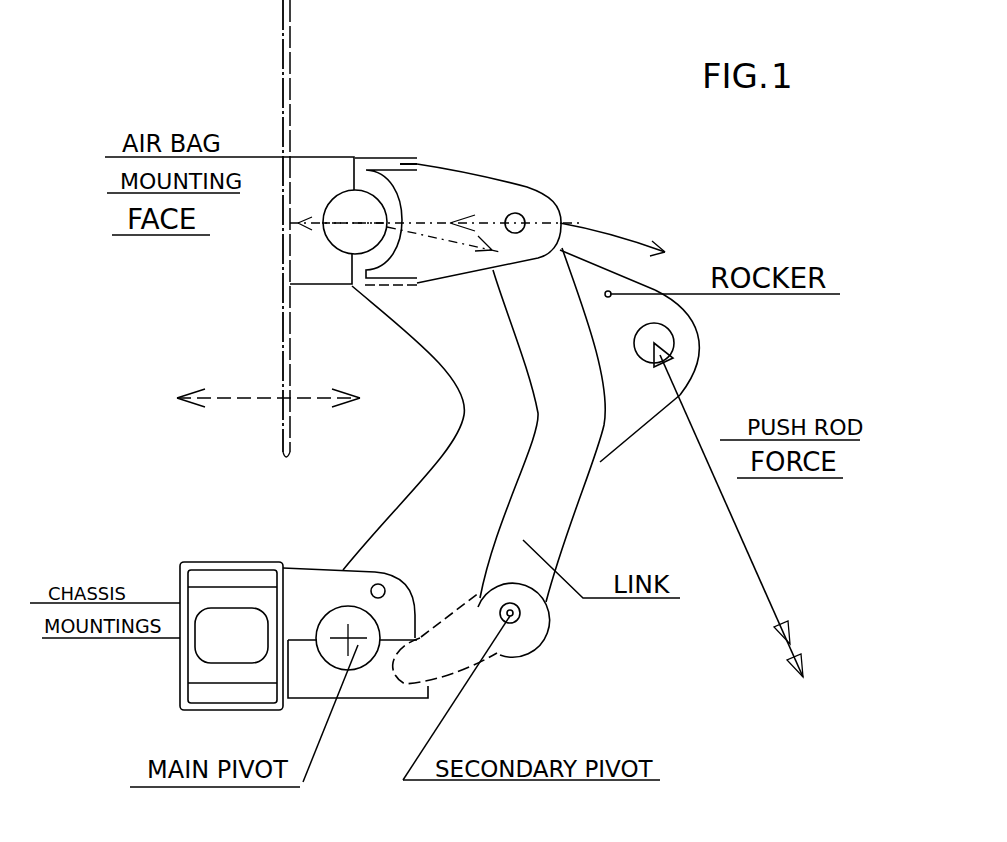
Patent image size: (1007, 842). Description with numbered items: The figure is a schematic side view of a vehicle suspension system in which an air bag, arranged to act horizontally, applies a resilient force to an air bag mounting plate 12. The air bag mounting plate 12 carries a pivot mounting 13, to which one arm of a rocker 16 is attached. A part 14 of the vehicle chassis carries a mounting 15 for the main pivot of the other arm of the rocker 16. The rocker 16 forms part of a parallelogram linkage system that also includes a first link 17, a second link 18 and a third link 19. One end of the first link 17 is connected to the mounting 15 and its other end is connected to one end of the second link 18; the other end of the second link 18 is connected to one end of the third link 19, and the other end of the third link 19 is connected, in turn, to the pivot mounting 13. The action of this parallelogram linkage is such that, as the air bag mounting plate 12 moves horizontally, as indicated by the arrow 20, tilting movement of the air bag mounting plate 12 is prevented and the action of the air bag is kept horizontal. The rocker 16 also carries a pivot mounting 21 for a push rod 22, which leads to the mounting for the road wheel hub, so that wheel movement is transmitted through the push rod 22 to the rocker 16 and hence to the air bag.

The air bag mounting plate 12 is at (284, 92).
The pivot mounting 13 is at (325, 175).
The part of the chassis 14 is at (247, 576).
The mounting 15 is at (308, 588).
The rocker 16 is at (688, 325).
The first link 17 is at (455, 648).
The second link 18 is at (560, 468).
The third link 19 is at (462, 197).
The arrow 20 is at (268, 375).
The pivot mounting 21 is at (657, 343).
The push rod 22 is at (753, 565).